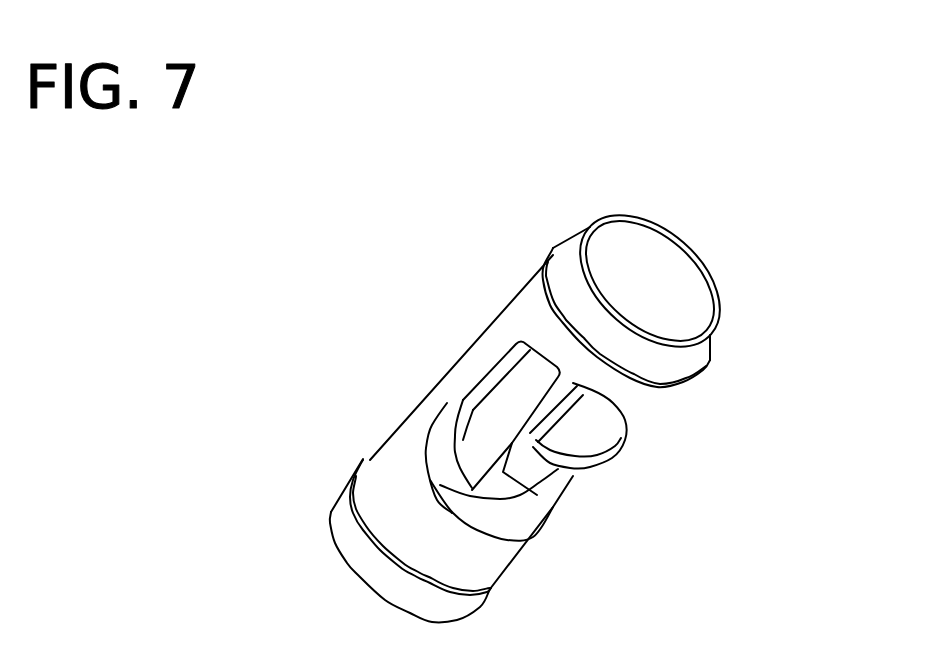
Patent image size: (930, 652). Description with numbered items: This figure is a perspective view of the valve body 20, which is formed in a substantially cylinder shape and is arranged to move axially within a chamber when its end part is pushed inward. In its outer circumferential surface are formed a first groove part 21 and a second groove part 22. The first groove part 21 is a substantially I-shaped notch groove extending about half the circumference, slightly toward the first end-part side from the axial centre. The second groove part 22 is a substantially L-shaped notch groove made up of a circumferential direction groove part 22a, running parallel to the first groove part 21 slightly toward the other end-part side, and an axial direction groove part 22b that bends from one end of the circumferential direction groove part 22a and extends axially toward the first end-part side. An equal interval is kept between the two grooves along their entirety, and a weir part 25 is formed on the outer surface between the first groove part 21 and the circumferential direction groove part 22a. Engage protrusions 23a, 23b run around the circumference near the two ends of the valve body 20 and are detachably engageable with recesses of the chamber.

The valve body 20 is at (752, 214).
The first groove part 21 is at (621, 430).
The second groove part 22 is at (445, 336).
The circumferential direction groove part 22a is at (440, 485).
The axial direction groove part 22b is at (480, 433).
The engage protrusion 23a is at (706, 372).
The engage protrusion 23b is at (495, 591).
The weir part 25 is at (583, 476).